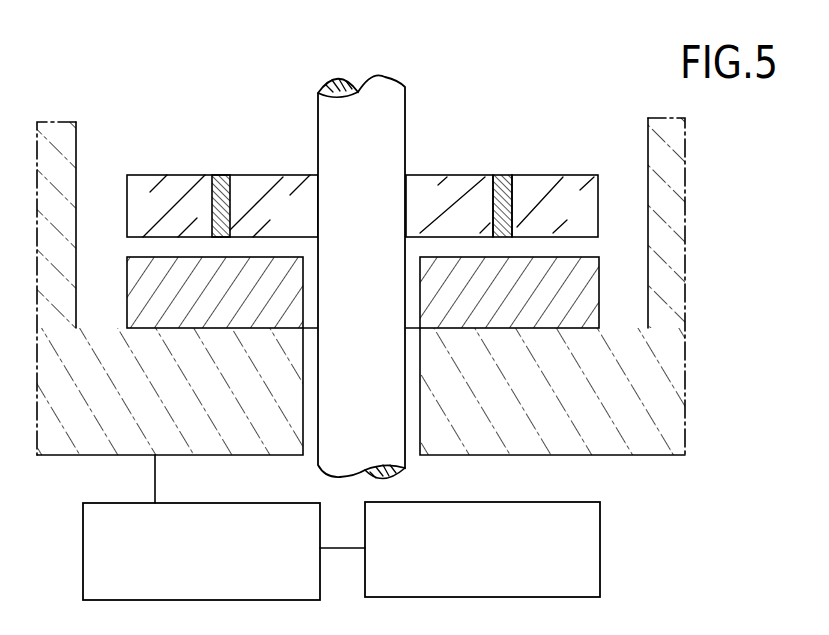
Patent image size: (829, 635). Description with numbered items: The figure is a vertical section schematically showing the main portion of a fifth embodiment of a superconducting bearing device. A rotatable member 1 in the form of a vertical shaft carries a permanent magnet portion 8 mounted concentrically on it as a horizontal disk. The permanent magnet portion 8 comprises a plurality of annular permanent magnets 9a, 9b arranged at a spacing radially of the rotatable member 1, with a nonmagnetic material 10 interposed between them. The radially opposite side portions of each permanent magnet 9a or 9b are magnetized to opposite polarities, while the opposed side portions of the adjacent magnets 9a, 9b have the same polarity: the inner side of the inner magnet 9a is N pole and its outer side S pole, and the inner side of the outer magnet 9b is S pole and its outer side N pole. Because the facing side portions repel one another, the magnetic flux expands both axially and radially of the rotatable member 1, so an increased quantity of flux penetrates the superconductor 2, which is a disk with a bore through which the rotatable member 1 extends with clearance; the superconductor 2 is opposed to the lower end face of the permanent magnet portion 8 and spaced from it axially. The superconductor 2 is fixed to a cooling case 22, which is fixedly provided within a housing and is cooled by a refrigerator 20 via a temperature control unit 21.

The rotatable member 1 is at (330, 128).
The superconductor 2 is at (128, 303).
The permanent magnet portion 8 is at (183, 128).
The inner permanent magnet 9a is at (450, 178).
The outer permanent magnet 9b is at (552, 178).
The nonmagnetic material 10 is at (220, 176).
The refrigerator 20 is at (600, 544).
The temperature control unit 21 is at (83, 548).
The cooling case 22 is at (583, 455).